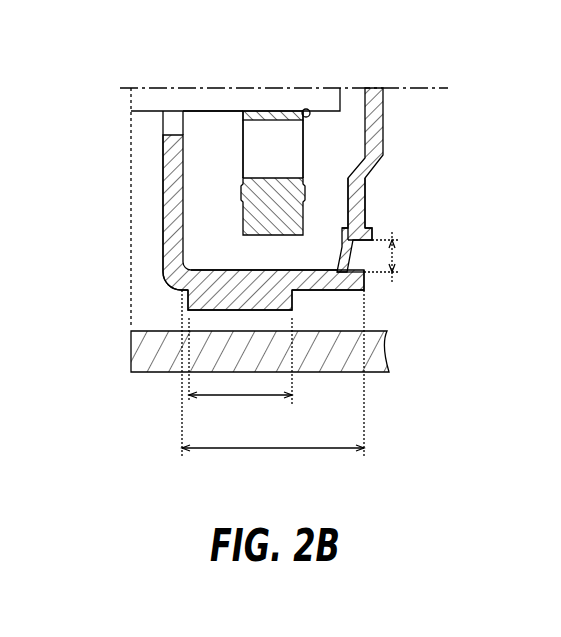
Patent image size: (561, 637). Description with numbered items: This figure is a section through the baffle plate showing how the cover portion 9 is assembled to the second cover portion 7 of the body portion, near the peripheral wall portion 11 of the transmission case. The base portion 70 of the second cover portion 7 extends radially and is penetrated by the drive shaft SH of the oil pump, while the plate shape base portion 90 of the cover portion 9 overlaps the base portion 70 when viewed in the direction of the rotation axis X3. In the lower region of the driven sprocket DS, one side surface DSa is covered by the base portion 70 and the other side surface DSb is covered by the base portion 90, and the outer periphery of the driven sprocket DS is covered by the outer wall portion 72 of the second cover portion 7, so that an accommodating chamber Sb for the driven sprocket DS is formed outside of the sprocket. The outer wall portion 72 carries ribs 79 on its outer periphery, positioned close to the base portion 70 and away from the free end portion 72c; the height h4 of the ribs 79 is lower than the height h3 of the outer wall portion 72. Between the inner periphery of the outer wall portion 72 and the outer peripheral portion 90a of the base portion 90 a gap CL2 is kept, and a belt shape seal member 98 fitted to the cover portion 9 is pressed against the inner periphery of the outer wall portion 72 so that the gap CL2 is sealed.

The rotation axis X3 is at (302, 91).
The drive shaft SH is at (192, 100).
The driven sprocket DS is at (275, 110).
The one side surface DSa is at (243, 205).
The other side surface DSb is at (303, 210).
The accommodating chamber Sb is at (293, 268).
The cover portion 9 is at (388, 152).
The base portion 90 is at (367, 193).
The outer peripheral portion 90a is at (369, 231).
The gap CL2 is at (404, 257).
The base portion 70 is at (163, 219).
The second cover portion 7 is at (155, 253).
The ribs 79 is at (212, 291).
The outer wall portion 72 is at (322, 296).
The end portion 72c is at (367, 284).
The seal member 98 is at (344, 284).
The peripheral wall portion 11 is at (135, 352).
The height of the ribs h4 is at (240, 379).
The height of the outer wall portion h3 is at (273, 385).